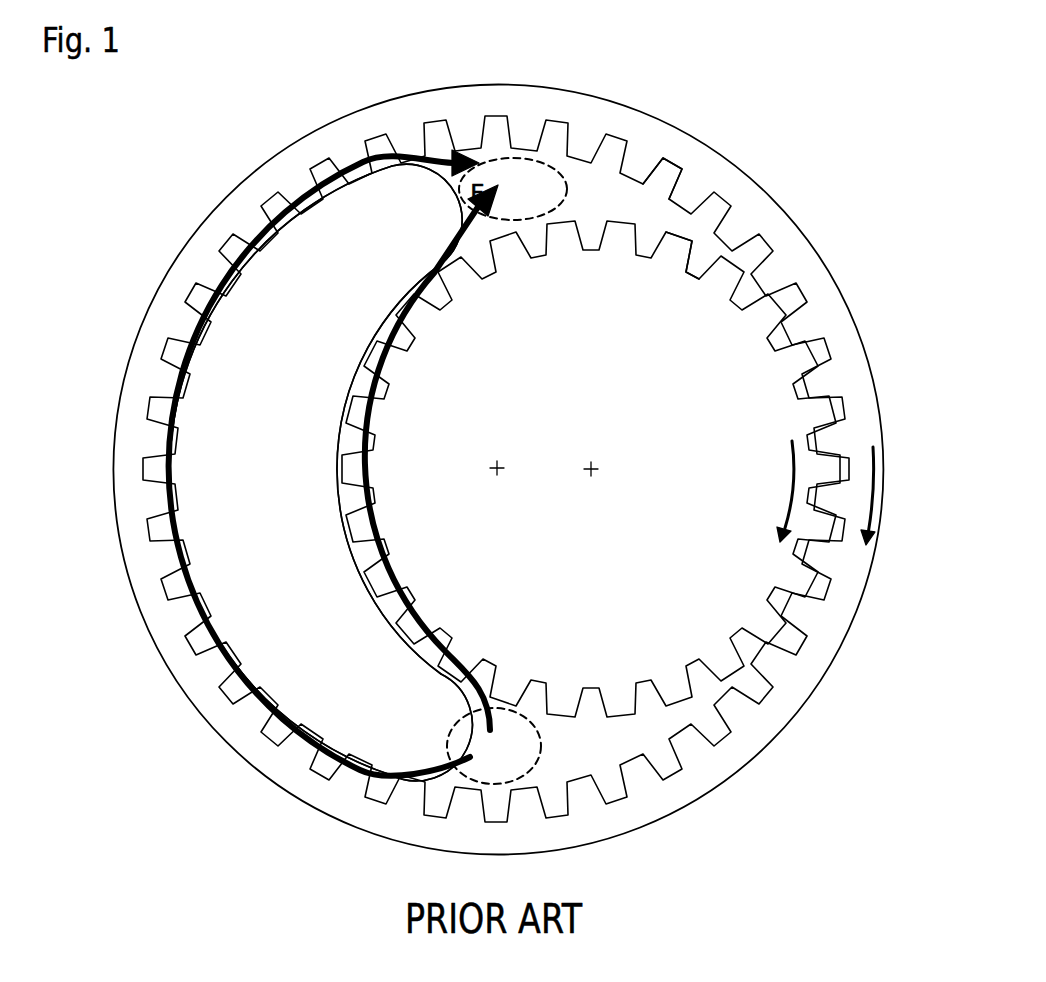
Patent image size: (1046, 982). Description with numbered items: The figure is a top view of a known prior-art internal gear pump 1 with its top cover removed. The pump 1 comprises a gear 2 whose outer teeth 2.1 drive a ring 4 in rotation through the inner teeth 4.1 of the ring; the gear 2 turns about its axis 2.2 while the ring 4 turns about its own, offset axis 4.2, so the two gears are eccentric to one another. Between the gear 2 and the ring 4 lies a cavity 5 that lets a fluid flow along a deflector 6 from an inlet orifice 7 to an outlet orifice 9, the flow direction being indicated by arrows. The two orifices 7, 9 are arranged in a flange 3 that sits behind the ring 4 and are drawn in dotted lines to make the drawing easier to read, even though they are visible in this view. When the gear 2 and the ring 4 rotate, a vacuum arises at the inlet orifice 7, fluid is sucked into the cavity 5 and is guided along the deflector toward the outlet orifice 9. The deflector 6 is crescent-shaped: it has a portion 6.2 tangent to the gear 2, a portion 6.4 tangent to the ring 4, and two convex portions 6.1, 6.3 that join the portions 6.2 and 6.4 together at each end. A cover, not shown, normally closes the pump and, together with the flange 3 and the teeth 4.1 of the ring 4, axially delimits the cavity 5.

The internal gear pump 1 is at (100, 240).
The gear 2 is at (686, 410).
The outer teeth 2.1 is at (665, 262).
The axis 2.2 is at (593, 474).
The flange 3 is at (666, 748).
The ring 4 is at (116, 432).
The inner teeth 4.1 is at (655, 183).
The axis 4.2 is at (494, 462).
The cavity 5 is at (578, 768).
The deflector 6 is at (273, 408).
The convex portion 6.1 is at (413, 757).
The portion tangent to the gear 6.2 is at (355, 582).
The convex portion 6.3 is at (443, 186).
The portion tangent to the ring 6.4 is at (175, 458).
The inlet orifice 7 is at (498, 762).
The outlet orifice 9 is at (520, 207).